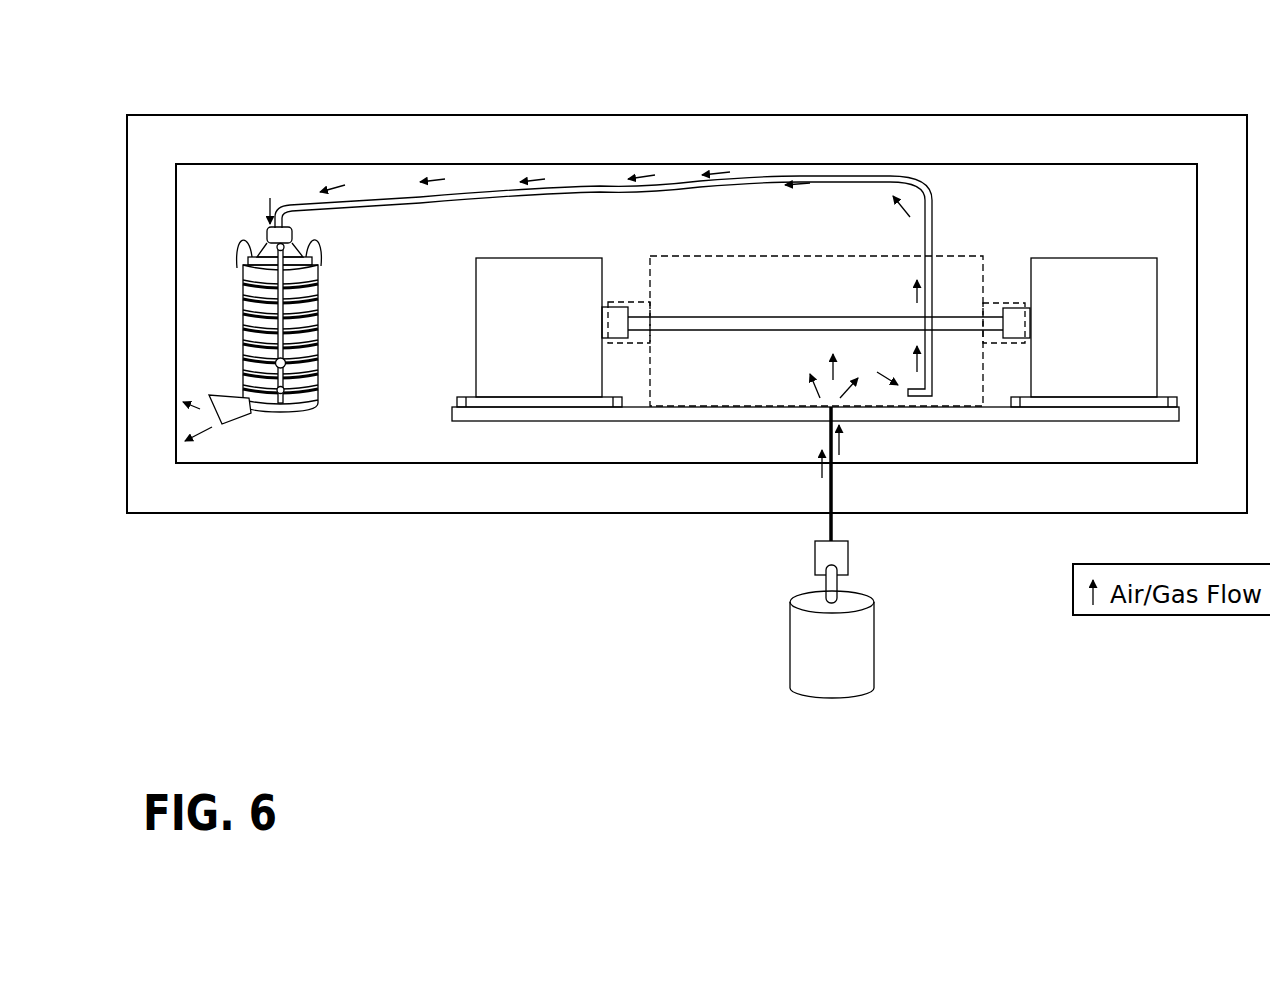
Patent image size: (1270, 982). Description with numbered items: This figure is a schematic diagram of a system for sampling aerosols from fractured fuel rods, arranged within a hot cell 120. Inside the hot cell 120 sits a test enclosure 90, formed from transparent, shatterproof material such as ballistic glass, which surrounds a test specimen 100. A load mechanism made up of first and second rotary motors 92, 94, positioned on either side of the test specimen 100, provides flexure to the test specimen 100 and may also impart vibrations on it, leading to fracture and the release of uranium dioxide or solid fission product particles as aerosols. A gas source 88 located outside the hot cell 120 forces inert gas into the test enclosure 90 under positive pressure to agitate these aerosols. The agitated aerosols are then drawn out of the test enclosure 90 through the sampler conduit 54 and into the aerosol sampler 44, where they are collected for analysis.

The hot cell 120 is at (1056, 114).
The sampler conduit 54 is at (590, 186).
The aerosol sampler 44 is at (320, 316).
The first rotary motor 92 is at (551, 351).
The second rotary motor 94 is at (1102, 338).
The test enclosure 90 is at (968, 250).
The test specimen 100 is at (665, 316).
The gas source 88 is at (790, 640).